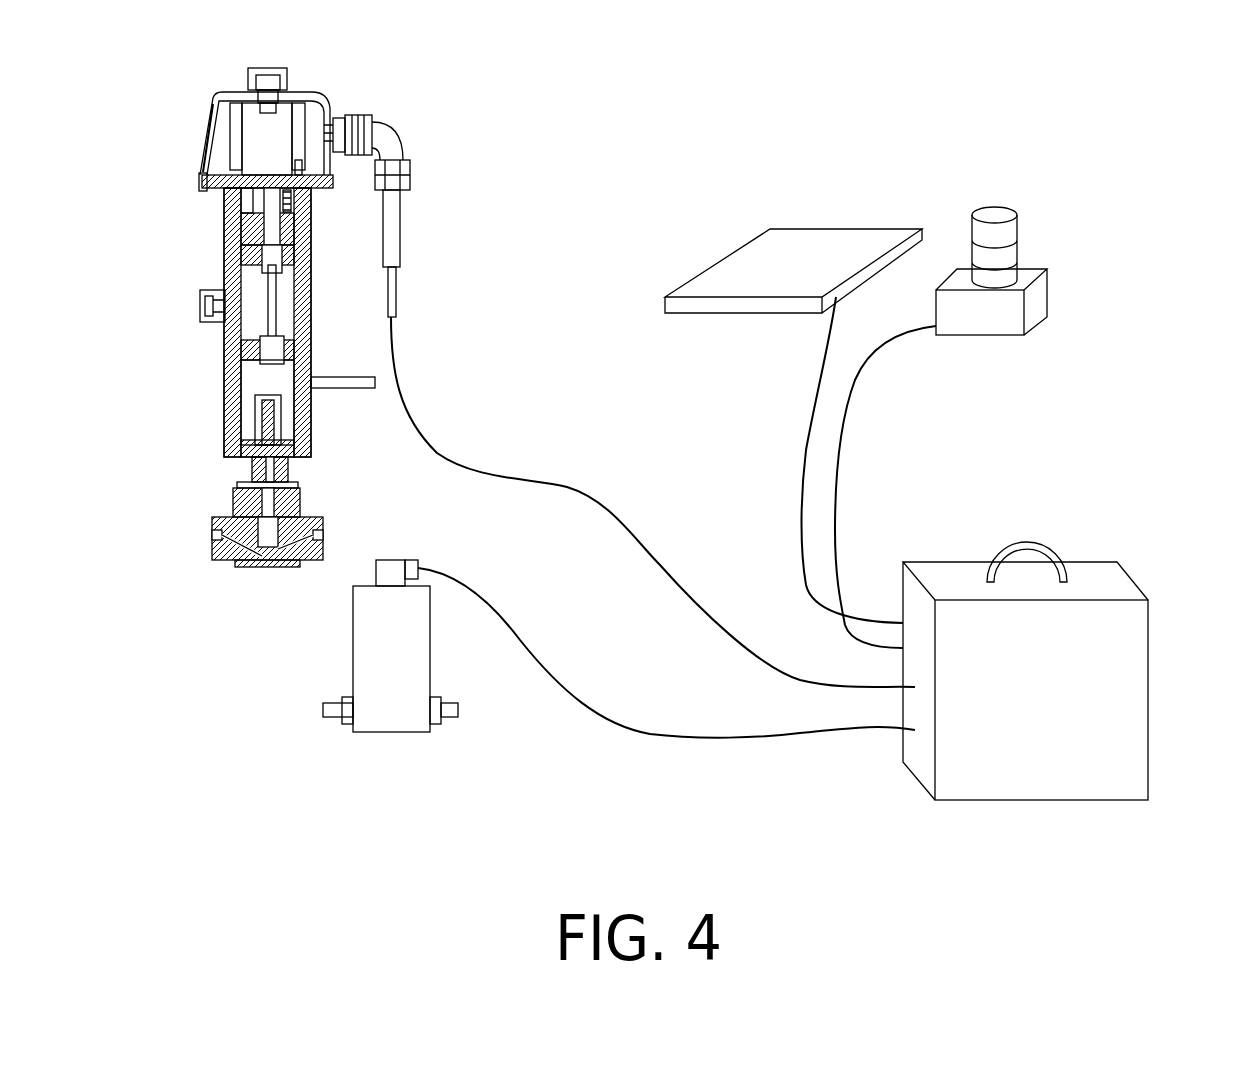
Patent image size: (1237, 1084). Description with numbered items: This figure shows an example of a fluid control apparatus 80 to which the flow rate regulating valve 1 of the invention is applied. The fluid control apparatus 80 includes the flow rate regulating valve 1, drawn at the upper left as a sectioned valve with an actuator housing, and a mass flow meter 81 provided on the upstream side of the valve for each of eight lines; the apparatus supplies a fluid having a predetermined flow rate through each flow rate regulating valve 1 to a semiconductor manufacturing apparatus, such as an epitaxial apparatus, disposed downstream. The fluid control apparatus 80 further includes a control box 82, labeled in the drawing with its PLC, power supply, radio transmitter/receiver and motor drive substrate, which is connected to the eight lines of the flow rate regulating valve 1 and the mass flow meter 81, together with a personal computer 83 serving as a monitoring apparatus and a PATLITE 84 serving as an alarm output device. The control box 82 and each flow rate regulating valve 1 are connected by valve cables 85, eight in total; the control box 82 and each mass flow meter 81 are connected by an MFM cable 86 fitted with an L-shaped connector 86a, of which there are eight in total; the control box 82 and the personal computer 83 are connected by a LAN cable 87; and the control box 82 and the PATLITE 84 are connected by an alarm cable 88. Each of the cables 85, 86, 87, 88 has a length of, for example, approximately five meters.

The flow rate regulating valve 1 is at (354, 96).
The fluid control apparatus 80 is at (1112, 416).
The mass flow meter 81 is at (353, 644).
The control box 82 is at (1065, 801).
The personal computer 83 is at (825, 247).
The PATLITE 84 is at (1049, 289).
The valve cable 85 is at (627, 522).
The MFM cable 86 is at (647, 735).
The L-shaped connector 86a is at (392, 560).
The LAN cable 87 is at (807, 441).
The alarm cable 88 is at (853, 405).